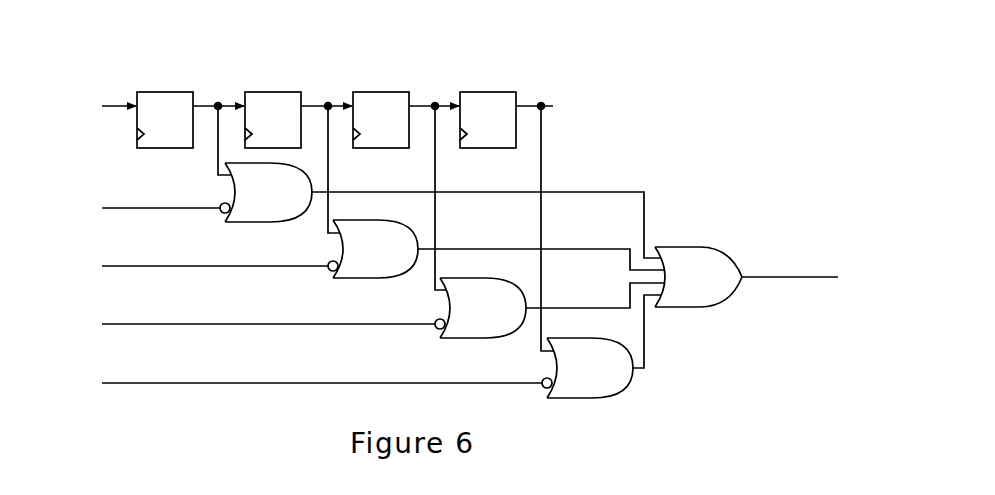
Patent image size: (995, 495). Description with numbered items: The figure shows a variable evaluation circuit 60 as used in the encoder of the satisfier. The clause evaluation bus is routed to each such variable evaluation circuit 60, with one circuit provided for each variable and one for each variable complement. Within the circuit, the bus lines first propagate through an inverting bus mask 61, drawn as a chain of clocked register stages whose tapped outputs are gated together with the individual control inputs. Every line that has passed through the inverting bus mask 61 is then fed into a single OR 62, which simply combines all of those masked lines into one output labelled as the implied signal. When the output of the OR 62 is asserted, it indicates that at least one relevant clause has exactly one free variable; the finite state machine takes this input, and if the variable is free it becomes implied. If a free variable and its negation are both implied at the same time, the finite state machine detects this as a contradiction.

The variable evaluation circuit 60 is at (590, 174).
The inverting bus mask 61 is at (276, 78).
The OR 62 is at (680, 308).